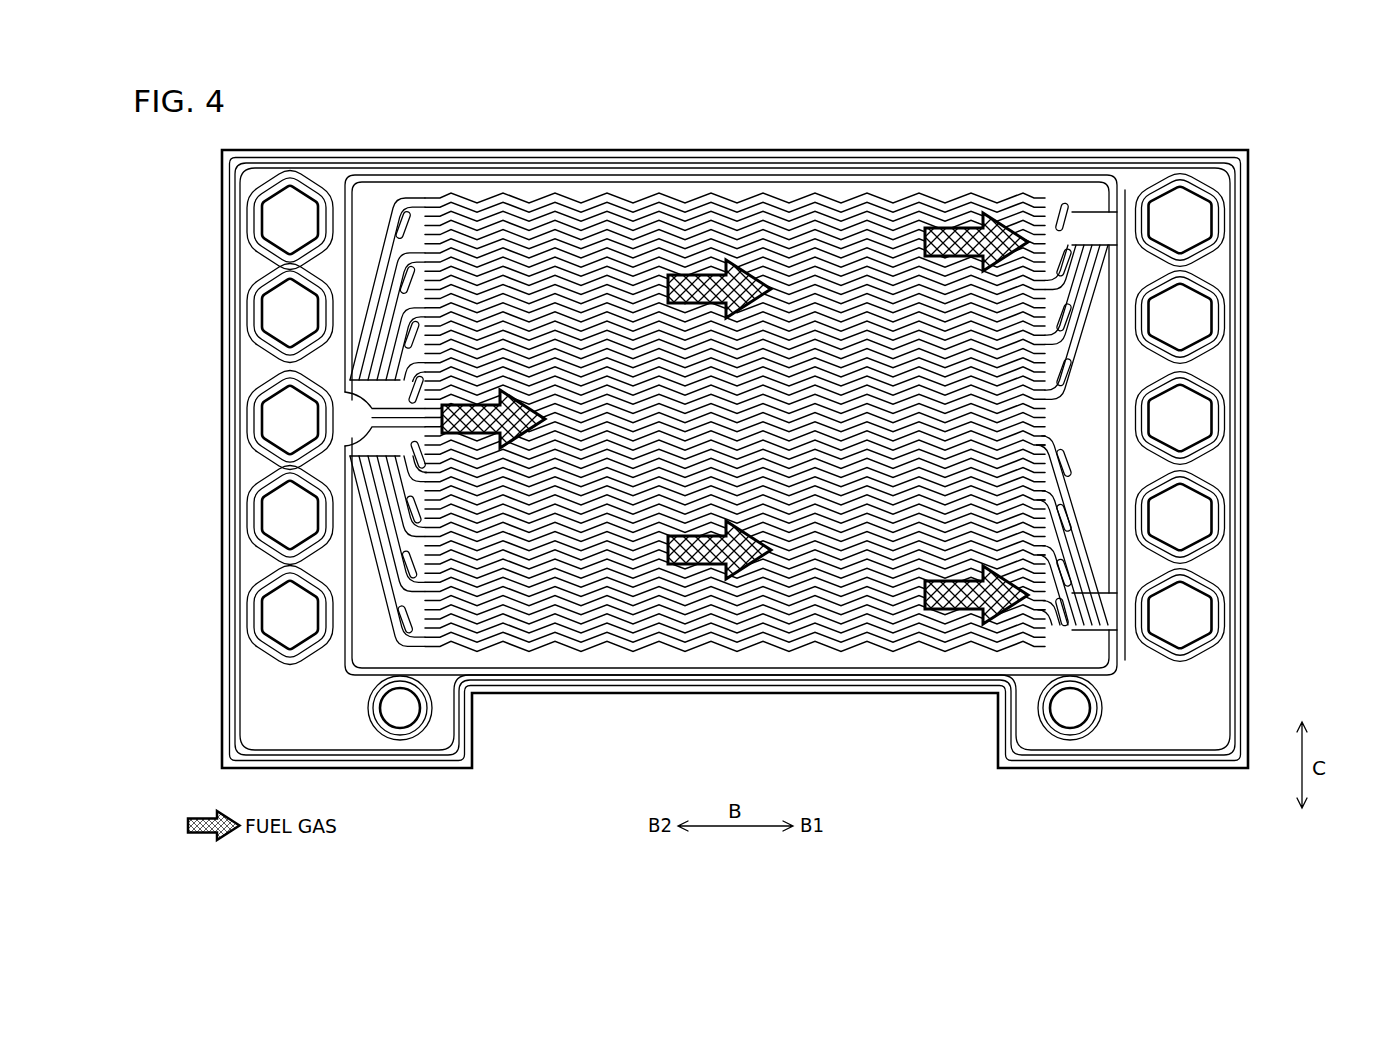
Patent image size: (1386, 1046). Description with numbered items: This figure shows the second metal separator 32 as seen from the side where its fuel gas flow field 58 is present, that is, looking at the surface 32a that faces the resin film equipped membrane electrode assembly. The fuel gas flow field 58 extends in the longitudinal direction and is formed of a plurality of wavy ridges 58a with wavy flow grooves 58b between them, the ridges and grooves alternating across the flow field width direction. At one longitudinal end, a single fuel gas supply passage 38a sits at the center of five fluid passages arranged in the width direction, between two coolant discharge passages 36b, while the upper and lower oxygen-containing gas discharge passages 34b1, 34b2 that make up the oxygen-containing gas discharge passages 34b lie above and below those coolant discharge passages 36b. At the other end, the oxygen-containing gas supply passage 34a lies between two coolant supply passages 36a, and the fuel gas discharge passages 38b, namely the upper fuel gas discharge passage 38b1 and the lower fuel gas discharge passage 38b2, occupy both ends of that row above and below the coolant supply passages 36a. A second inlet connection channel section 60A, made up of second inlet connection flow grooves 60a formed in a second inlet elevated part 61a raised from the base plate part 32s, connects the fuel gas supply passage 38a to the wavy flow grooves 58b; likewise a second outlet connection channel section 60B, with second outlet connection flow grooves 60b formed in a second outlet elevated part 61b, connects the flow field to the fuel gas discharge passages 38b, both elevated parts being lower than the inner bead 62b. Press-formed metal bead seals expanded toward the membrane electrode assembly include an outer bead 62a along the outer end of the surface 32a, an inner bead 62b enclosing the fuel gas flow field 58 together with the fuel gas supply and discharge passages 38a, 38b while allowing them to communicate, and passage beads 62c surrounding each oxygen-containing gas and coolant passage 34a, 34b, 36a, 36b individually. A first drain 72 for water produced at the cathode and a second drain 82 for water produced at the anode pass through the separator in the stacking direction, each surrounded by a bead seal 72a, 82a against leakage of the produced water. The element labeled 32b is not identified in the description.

The second metal separator 32 is at (685, 428).
The surface 32a is at (1160, 158).
The outer edge of the separator 32b is at (1213, 150).
The base plate part 32s is at (678, 459).
The oxygen-containing gas supply passage 34a is at (1198, 427).
The oxygen-containing gas discharge passages 34b is at (216, 429).
The upper oxygen-containing gas discharge passage 34b1 is at (290, 220).
The lower oxygen-containing gas discharge passage 34b2 is at (290, 615).
The coolant supply passages 36a is at (1200, 315).
The coolant discharge passages 36b is at (277, 311).
The fuel gas supply passage 38a is at (273, 413).
The fuel gas discharge passages 38b is at (1252, 429).
The upper fuel gas discharge passage 38b1 is at (1180, 220).
The lower fuel gas discharge passage 38b2 is at (1180, 615).
The fuel gas flow field 58 is at (735, 366).
The wavy ridges 58a is at (703, 116).
The wavy flow grooves 58b is at (688, 204).
The second inlet connection flow grooves 60a is at (278, 376).
The second inlet connection channel section 60A is at (278, 436).
The second outlet connection flow grooves 60b is at (1172, 366).
The second outlet connection channel section 60B is at (1172, 457).
The second inlet elevated part 61a is at (360, 249).
The second outlet elevated part 61b is at (1103, 365).
The outer bead 62a is at (825, 694).
The inner bead 62b is at (598, 669).
The passage beads 62c is at (248, 205).
The first drain 72 is at (400, 722).
The bead seal 72a is at (420, 733).
The second drain 82 is at (1072, 722).
The bead seal 82a is at (1052, 735).